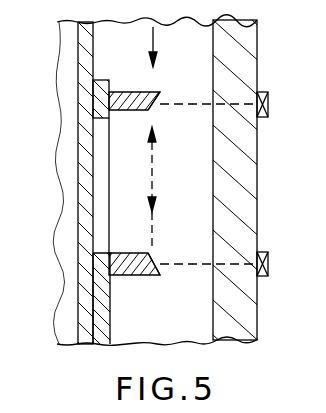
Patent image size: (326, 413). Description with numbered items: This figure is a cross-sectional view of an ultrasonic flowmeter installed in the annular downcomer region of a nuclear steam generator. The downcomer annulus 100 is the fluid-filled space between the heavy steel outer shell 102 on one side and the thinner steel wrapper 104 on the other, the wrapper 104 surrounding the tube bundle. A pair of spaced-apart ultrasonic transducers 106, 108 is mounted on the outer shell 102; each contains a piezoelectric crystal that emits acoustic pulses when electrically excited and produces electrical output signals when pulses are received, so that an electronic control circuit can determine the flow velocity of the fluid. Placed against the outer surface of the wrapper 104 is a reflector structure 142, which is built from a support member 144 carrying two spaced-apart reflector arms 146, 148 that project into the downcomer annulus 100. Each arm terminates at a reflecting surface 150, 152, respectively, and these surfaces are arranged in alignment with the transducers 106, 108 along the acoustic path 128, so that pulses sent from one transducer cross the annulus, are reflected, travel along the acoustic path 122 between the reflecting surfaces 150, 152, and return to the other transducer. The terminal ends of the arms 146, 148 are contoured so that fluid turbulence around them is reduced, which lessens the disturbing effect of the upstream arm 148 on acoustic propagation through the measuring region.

The downcomer annulus 100 is at (110, 43).
The outer shell 102 is at (246, 60).
The wrapper 104 is at (88, 308).
The ultrasonic transducer 106 is at (268, 104).
The ultrasonic transducer 108 is at (268, 265).
The acoustic path 122 is at (153, 178).
The acoustic path 128 is at (187, 268).
The reflector structure 142 is at (90, 183).
The support member 144 is at (100, 275).
The reflector arm 146 is at (125, 277).
The reflector arm 148 is at (121, 114).
The reflecting surface 150 is at (150, 254).
The reflecting surface 152 is at (160, 93).